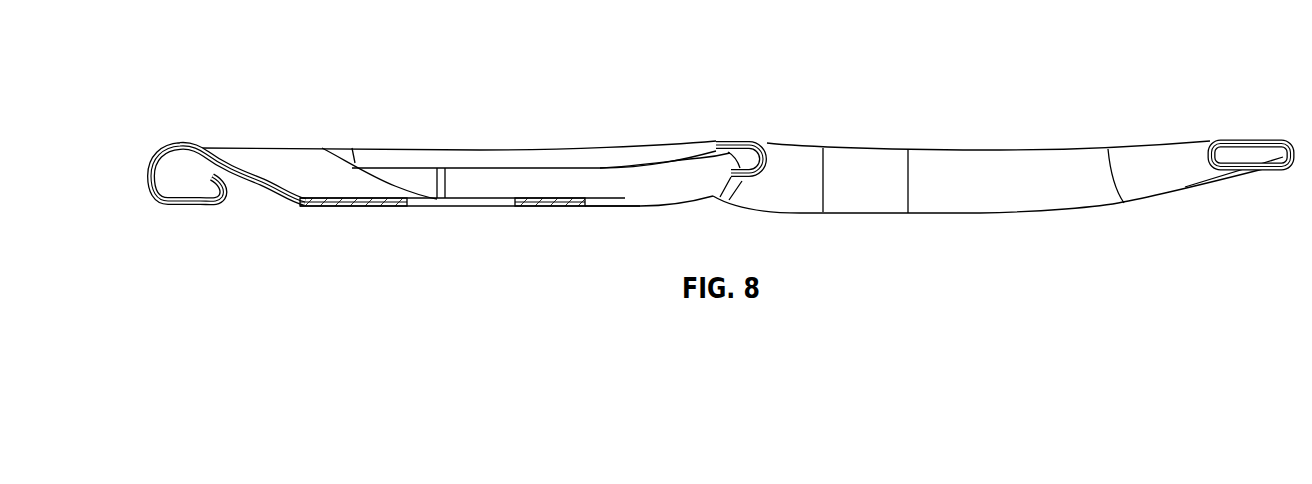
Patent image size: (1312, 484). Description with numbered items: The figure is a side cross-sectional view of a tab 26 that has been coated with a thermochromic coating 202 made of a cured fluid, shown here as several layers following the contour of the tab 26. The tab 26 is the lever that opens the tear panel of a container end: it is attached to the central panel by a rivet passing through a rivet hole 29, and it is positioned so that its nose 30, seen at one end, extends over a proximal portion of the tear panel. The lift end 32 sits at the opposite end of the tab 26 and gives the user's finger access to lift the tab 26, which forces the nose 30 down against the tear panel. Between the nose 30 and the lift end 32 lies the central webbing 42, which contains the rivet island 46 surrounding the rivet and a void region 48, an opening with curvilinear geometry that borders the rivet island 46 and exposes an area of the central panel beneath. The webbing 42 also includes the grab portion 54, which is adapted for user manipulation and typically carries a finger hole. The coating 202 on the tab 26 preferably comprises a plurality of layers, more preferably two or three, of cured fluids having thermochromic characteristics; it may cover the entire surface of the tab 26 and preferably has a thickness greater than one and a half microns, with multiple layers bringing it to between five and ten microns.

The tab 26 is at (226, 58).
The nose 30 is at (146, 173).
The lift end 32 is at (1258, 140).
The rivet island 46 is at (318, 173).
The central webbing 42 is at (550, 197).
The rivet hole 29 is at (465, 204).
The void region 48 is at (628, 194).
The coating 202 is at (758, 142).
The grab portion 54 is at (958, 150).